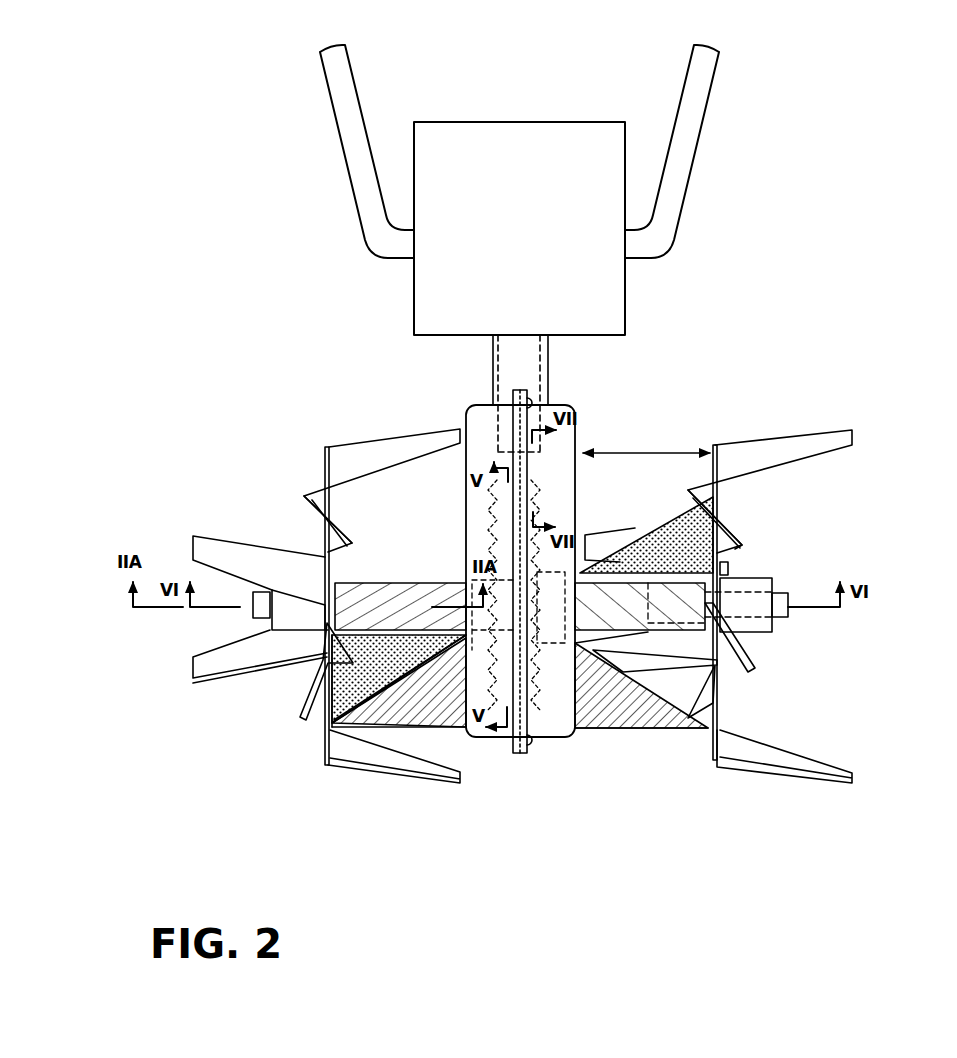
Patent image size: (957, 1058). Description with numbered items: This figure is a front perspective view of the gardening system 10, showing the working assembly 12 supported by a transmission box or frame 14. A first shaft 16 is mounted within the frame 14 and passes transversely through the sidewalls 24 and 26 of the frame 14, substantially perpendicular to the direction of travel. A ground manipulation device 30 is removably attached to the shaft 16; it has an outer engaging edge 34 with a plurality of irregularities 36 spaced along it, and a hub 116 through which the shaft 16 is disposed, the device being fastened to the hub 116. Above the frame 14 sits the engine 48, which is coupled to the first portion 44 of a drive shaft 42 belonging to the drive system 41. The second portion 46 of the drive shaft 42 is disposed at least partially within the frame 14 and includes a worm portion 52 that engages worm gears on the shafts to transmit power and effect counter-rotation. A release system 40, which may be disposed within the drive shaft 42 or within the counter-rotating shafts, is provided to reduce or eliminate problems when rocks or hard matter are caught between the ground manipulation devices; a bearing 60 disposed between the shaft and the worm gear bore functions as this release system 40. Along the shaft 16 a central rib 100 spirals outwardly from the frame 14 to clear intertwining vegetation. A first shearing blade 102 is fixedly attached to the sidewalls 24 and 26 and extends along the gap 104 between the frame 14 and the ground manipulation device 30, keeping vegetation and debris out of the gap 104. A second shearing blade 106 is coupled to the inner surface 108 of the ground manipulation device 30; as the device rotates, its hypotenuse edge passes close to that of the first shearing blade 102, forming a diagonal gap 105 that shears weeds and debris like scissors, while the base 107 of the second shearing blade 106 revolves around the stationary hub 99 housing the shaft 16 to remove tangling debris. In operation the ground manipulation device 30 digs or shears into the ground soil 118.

The gardening system 10 is at (742, 257).
The working assembly 12 is at (812, 790).
The frame 14 is at (466, 412).
The first shaft 16 is at (788, 600).
The sidewall 24 is at (468, 735).
The sidewall 26 is at (323, 580).
The ground manipulation device 30 is at (331, 445).
The outer engaging edge 34 is at (240, 676).
The irregularities 36 is at (306, 690).
The release system 40 is at (538, 403).
The drive system 41 is at (490, 396).
The drive shaft 42 is at (548, 358).
The first portion 44 is at (490, 374).
The second portion 46 is at (556, 454).
The engine 48 is at (416, 289).
The worm portion 52 is at (560, 511).
The bearing 60 is at (443, 703).
The stationary hub 99 is at (383, 578).
The central rib 100 is at (418, 603).
The first shearing blade 102 is at (410, 707).
The gap 104 is at (652, 453).
The diagonal gap 105 is at (373, 700).
The second shearing blade 106 is at (340, 695).
The base 107 is at (323, 551).
The inner surface 108 is at (331, 497).
The hub 116 is at (735, 578).
The ground soil 118 is at (788, 813).